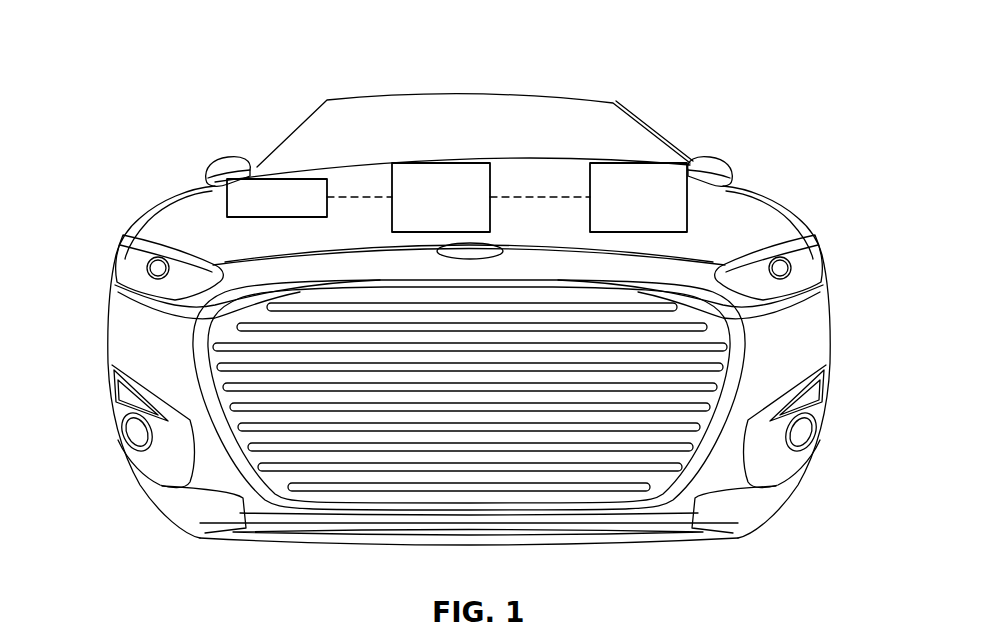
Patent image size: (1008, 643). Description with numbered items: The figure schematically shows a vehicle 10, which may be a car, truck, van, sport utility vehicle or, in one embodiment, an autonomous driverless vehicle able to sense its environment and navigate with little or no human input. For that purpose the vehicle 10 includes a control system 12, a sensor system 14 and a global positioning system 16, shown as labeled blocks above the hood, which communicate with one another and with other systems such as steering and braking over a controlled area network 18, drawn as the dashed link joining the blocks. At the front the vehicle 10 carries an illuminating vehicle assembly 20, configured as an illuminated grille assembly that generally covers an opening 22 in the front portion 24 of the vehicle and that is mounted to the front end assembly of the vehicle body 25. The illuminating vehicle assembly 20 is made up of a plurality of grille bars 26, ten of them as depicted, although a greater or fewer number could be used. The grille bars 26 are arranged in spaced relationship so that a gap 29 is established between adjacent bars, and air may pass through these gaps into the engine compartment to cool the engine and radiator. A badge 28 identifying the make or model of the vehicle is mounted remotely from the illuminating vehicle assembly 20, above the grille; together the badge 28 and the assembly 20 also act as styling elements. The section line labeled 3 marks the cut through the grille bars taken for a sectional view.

The vehicle 10 is at (726, 47).
The control system 12 is at (438, 163).
The sensor system 14 is at (640, 163).
The global positioning system (GPS) 16 is at (245, 160).
The controlled area network (CAN) 18 is at (538, 189).
The illuminating vehicle assembly 20 is at (537, 294).
The opening 22 is at (207, 358).
The front portion 24 is at (110, 457).
The vehicle body 25 is at (828, 333).
The grille bars 26 is at (205, 308).
The badge 28 is at (437, 252).
The gap 29 is at (800, 287).
The section line 3- 3 is at (510, 415).